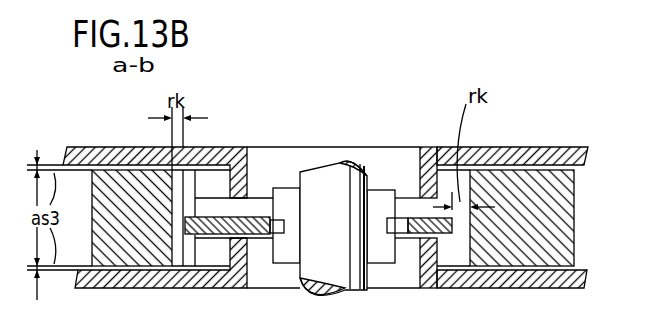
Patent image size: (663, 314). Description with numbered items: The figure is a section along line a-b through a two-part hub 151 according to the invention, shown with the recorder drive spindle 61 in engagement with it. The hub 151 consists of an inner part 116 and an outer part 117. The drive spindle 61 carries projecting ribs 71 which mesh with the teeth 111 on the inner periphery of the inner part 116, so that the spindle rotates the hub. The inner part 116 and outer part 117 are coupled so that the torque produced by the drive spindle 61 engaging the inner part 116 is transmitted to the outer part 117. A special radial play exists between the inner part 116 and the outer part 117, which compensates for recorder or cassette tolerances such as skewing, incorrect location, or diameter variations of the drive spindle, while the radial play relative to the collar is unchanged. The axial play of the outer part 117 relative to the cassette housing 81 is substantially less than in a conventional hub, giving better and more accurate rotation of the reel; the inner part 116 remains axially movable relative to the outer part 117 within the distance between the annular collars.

The inner part 116 is at (217, 216).
The teeth 111 is at (276, 222).
The drive spindle 61 is at (313, 175).
The projecting ribs 71 is at (380, 197).
The outer part 117 is at (517, 188).
The cassette housing 81 is at (550, 160).
The hub 151 is at (586, 186).